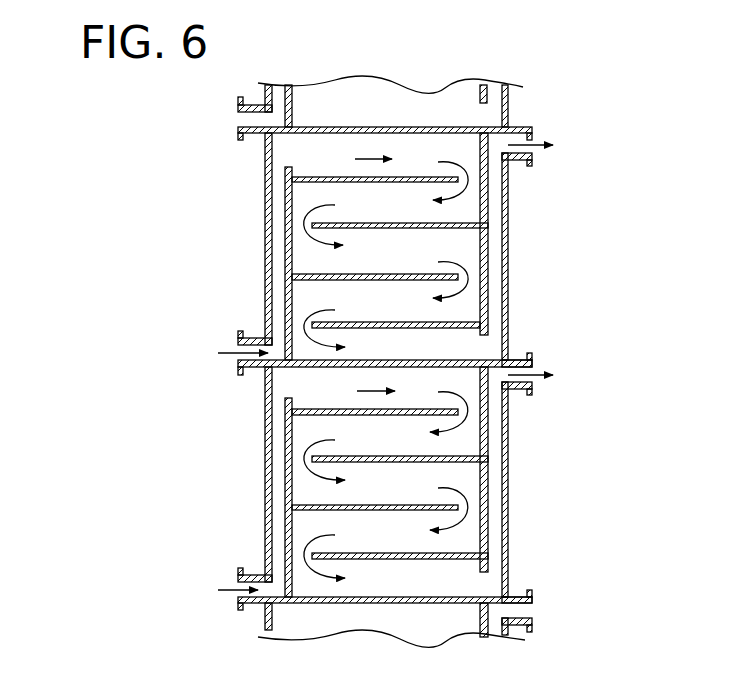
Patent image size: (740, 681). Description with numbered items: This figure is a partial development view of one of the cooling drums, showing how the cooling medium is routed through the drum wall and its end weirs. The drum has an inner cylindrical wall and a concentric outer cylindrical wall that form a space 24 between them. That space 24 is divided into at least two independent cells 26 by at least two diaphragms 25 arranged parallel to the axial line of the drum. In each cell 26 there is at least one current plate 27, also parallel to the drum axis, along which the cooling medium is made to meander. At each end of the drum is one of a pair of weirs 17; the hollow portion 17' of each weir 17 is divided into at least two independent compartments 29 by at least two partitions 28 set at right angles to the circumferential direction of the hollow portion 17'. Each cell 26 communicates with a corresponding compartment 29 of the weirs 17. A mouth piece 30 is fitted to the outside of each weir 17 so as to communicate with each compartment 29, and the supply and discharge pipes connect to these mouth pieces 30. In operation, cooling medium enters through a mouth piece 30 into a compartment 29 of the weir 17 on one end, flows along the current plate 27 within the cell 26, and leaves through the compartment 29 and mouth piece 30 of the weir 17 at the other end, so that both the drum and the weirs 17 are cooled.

The weir 17 is at (390, 365).
The hollow portion 17' is at (396, 352).
The space 24 is at (396, 95).
The diaphragm 25 is at (338, 127).
The cell 26 is at (290, 188).
The current plate 27 is at (414, 175).
The partition 28 is at (490, 130).
The compartment 29 is at (275, 235).
The mouth piece 30 is at (255, 100).